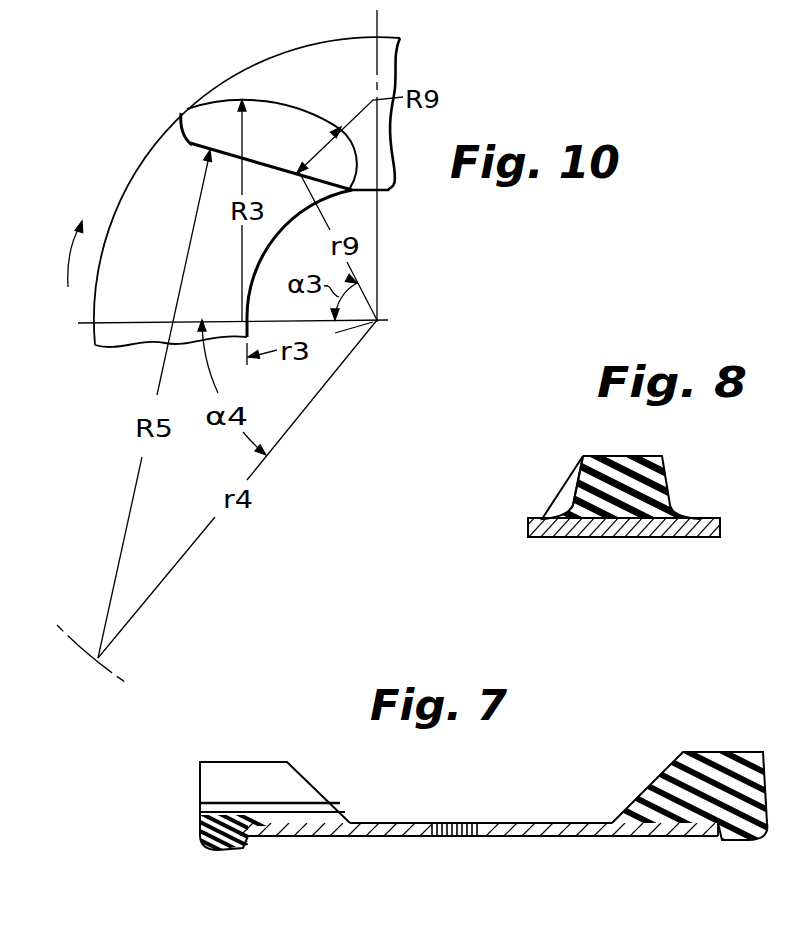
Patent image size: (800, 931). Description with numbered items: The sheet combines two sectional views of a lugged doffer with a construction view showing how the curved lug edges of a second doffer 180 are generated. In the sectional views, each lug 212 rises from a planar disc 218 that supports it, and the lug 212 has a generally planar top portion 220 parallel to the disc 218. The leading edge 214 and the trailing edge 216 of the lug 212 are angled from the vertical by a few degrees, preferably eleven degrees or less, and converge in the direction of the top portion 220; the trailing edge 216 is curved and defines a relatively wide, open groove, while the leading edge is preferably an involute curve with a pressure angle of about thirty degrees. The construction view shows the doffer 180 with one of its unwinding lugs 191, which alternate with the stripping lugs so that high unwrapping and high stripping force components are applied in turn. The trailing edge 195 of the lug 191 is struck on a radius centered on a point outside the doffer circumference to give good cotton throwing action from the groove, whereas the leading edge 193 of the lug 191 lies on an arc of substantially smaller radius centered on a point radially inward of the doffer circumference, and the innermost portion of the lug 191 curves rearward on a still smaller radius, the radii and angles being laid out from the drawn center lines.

In FIG. 10, the doffer 180 is at (153, 145).
In FIG. 10, the unwinding lug 191 is at (185, 114).
In FIG. 10, the leading edge 193 is at (335, 120).
In FIG. 10, the trailing edge 195 is at (194, 147).
In FIG. 7, the lug 212 is at (278, 761).
In FIG. 8, the leading edge 214 is at (670, 478).
In FIG. 8, the trailing edge 216 is at (578, 478).
In FIG. 7, the planar disc 218 is at (376, 838).
In FIG. 8, the top portion 220 is at (605, 455).
In FIG. 7, the top portion 220 is at (700, 752).